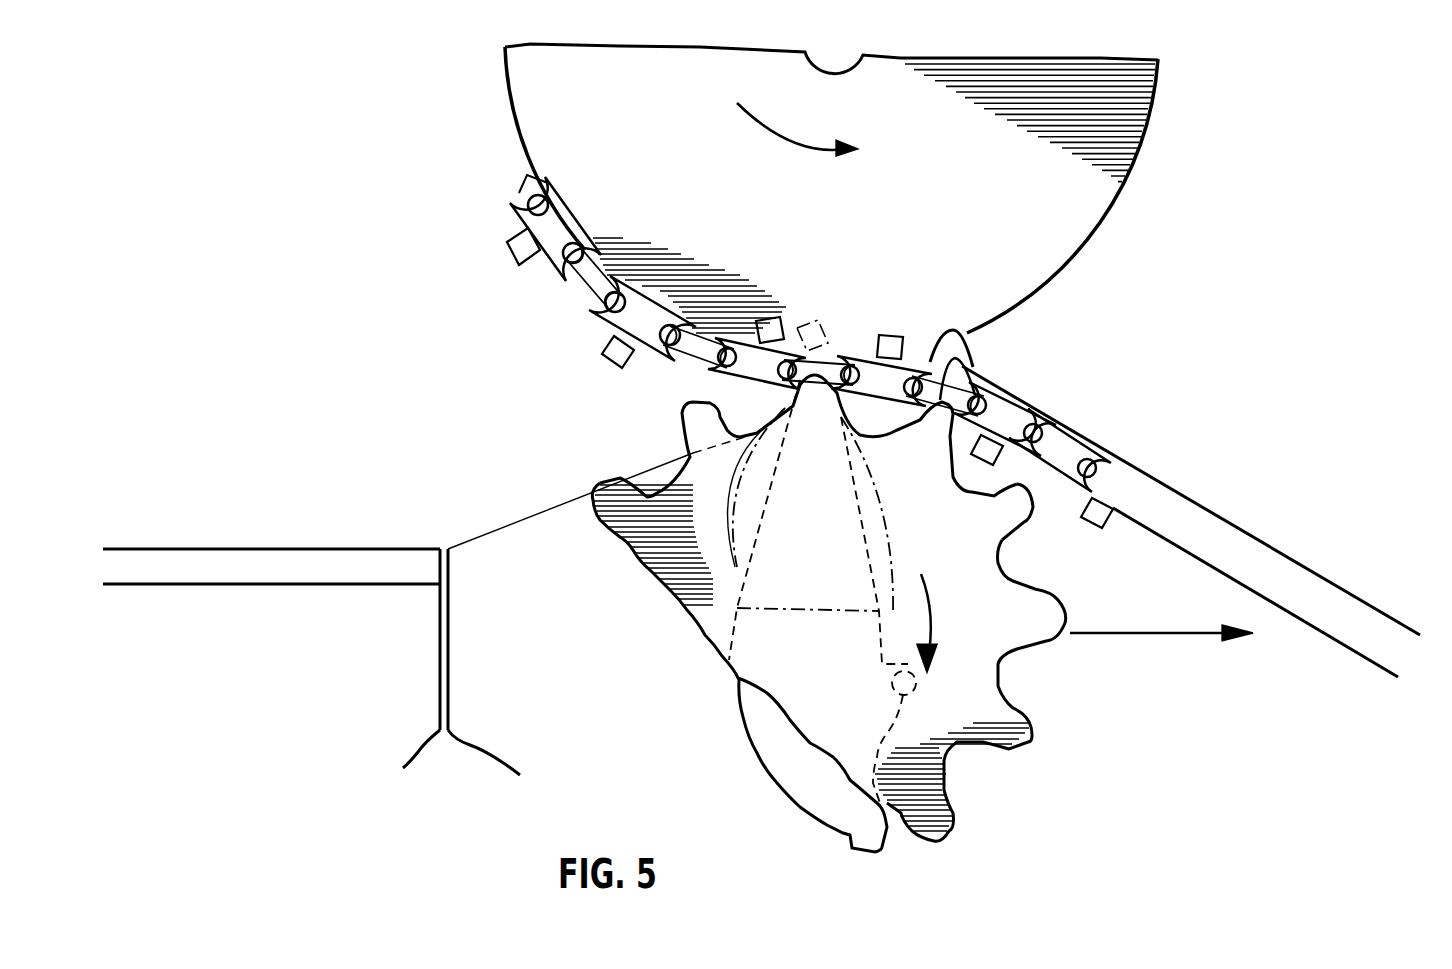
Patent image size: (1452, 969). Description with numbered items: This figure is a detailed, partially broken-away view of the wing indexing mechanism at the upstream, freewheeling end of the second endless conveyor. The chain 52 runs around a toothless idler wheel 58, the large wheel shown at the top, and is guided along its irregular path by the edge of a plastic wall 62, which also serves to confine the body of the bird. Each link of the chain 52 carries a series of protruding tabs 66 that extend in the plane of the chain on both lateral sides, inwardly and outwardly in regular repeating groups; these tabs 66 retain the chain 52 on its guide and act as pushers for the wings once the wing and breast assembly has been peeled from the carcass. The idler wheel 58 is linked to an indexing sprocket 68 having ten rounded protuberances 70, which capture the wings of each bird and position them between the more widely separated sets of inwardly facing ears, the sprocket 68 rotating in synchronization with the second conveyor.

The chain 52 is at (575, 283).
The toothless idler wheel 58 is at (858, 256).
The plastic wall 62 is at (1128, 379).
The protruding tab 66 is at (787, 340).
The indexing sprocket 68 is at (945, 551).
The rounded protuberance 70 is at (1040, 527).